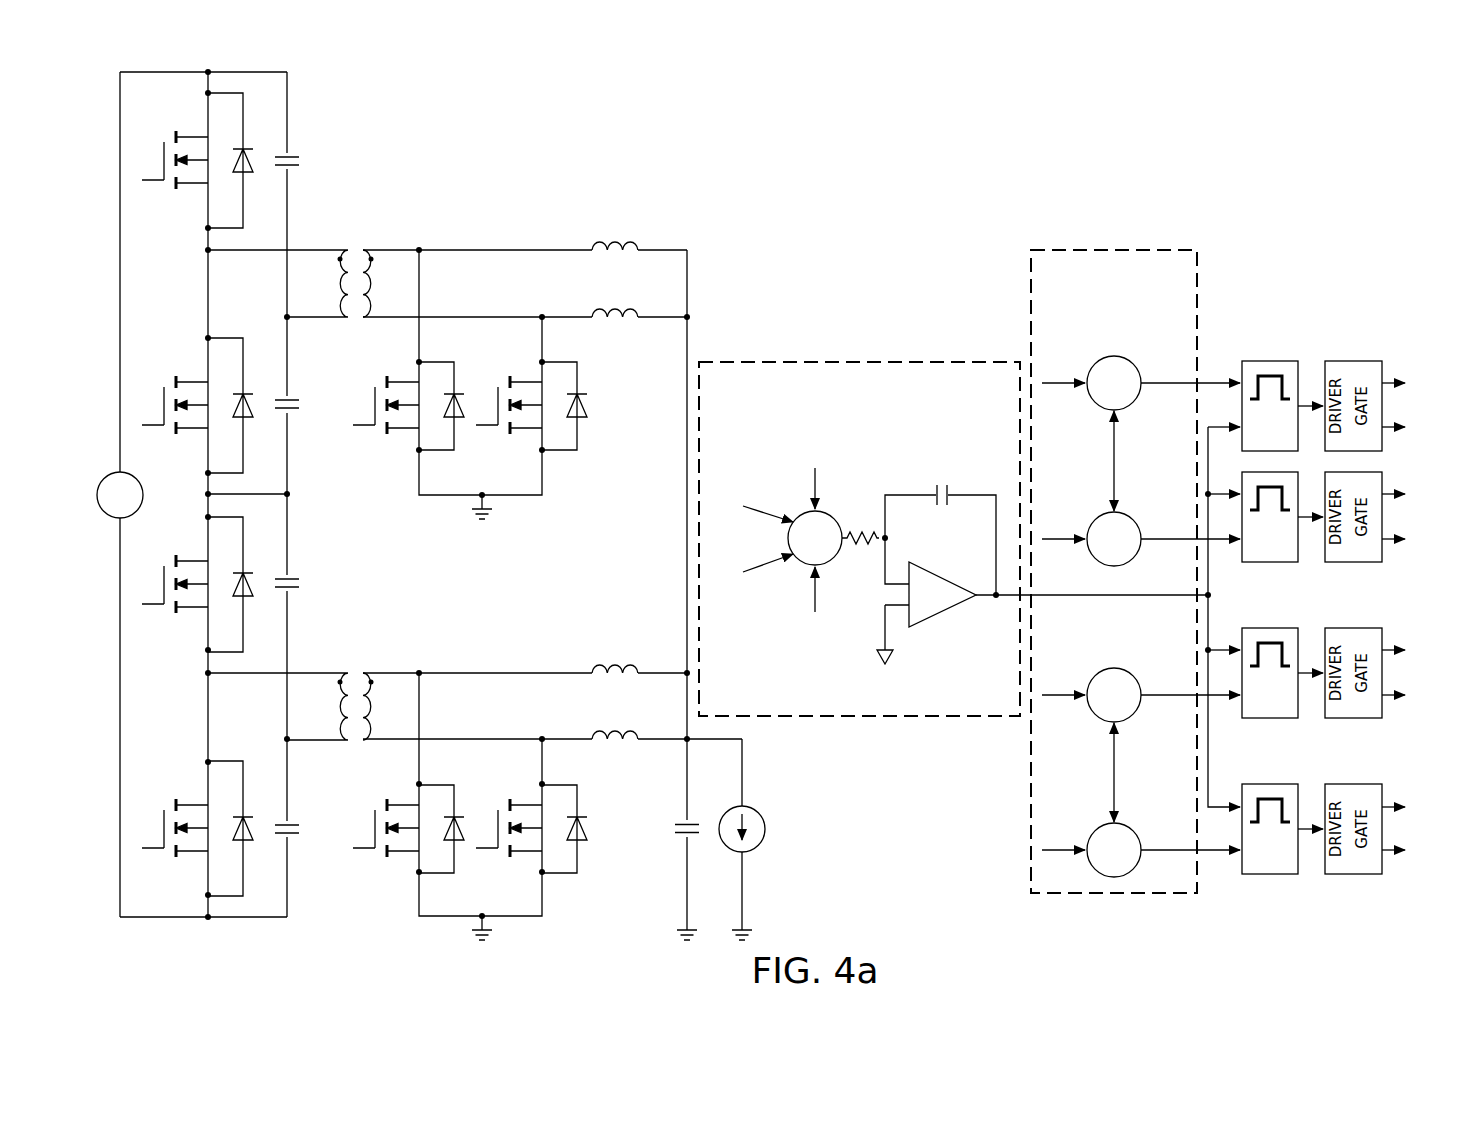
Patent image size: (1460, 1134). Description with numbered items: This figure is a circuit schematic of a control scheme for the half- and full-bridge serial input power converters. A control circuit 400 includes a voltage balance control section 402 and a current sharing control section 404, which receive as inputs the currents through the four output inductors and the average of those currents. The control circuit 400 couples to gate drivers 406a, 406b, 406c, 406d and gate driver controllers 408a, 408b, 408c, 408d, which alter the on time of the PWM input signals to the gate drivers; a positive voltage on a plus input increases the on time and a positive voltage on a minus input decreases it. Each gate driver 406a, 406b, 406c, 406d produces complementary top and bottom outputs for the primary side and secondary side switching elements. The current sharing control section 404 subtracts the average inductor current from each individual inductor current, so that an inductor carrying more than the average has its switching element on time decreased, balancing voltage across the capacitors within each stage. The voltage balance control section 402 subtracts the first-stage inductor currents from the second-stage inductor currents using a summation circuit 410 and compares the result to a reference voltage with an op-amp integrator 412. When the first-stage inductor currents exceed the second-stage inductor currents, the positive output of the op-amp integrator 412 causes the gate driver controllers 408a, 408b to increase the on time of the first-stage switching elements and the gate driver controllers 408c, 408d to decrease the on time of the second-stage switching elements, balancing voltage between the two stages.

The control circuit 400 is at (1290, 148).
The voltage balance control section 402 is at (913, 359).
The current sharing control section 404 is at (1142, 248).
The gate driver 406a is at (1353, 360).
The gate driver 406b is at (1353, 563).
The gate driver 406c is at (1353, 718).
The gate driver 406d is at (1353, 874).
The gate driver controller 408a is at (1272, 360).
The gate driver controller 408b is at (1272, 563).
The gate driver controller 408c is at (1272, 718).
The gate driver controller 408d is at (1272, 874).
The summation circuit 410 is at (803, 514).
The op-amp integrator 412 is at (940, 615).